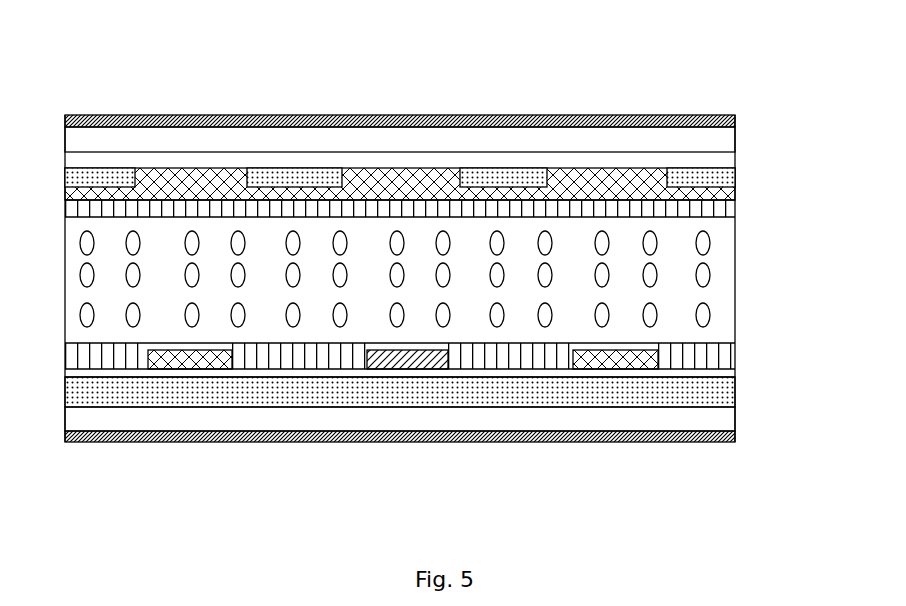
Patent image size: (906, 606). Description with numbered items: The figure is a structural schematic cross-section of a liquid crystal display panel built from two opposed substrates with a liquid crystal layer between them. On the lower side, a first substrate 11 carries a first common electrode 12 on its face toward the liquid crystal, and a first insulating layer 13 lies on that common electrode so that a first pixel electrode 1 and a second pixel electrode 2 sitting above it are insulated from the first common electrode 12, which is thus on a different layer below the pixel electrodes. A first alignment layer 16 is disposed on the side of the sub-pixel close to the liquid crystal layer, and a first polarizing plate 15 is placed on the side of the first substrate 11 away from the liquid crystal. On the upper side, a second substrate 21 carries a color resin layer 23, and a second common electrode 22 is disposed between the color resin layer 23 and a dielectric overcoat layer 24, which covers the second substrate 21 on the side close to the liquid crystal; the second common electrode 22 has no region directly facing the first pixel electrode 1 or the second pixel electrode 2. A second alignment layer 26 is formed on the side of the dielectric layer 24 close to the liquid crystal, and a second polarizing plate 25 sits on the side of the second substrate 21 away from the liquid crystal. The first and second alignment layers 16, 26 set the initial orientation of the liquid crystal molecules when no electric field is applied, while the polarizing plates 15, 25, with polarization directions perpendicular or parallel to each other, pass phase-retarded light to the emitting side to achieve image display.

The first pixel electrode 1 is at (567, 368).
The second pixel electrode 2 is at (410, 369).
The first substrate 11 is at (95, 417).
The first common electrode 12 is at (535, 392).
The first insulating layer 13 is at (722, 373).
The first polarizing plate 15 is at (185, 442).
The first alignment layer 16 is at (717, 353).
The second substrate 21 is at (107, 138).
The second common electrode 22 is at (668, 170).
The color resin layer 23 is at (662, 165).
The dielectric layer 24 is at (728, 197).
The second polarizing plate 25 is at (520, 115).
The second alignment layer 26 is at (725, 205).